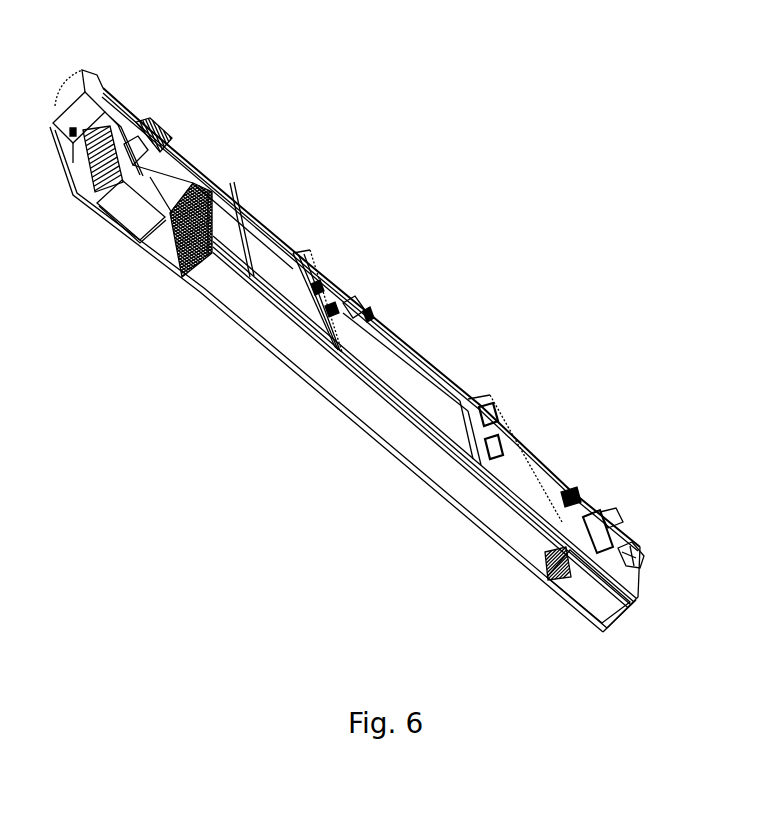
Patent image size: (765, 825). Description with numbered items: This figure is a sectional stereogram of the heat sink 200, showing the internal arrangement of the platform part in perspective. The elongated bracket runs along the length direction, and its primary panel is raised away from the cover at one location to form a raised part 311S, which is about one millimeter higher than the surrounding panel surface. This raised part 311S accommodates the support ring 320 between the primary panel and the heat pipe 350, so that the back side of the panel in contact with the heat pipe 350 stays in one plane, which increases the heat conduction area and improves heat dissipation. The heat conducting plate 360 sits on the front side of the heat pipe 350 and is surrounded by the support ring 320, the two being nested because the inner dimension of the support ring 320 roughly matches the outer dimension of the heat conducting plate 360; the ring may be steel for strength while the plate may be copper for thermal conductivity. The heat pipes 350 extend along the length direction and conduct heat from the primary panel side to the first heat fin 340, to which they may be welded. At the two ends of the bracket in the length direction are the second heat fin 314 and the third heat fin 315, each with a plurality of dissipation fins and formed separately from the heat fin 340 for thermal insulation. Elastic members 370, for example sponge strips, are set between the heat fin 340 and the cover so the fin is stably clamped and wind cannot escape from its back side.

The tray 200 is at (590, 192).
The raised part 311S is at (320, 270).
The second heat fin 314 is at (585, 578).
The third heat fin 315 is at (118, 236).
The support ring 320 is at (507, 453).
The heat fin 340 is at (180, 277).
The heat pipe 350 is at (250, 293).
The heat conducting plate 360 is at (342, 373).
The elastic member 370 is at (500, 547).